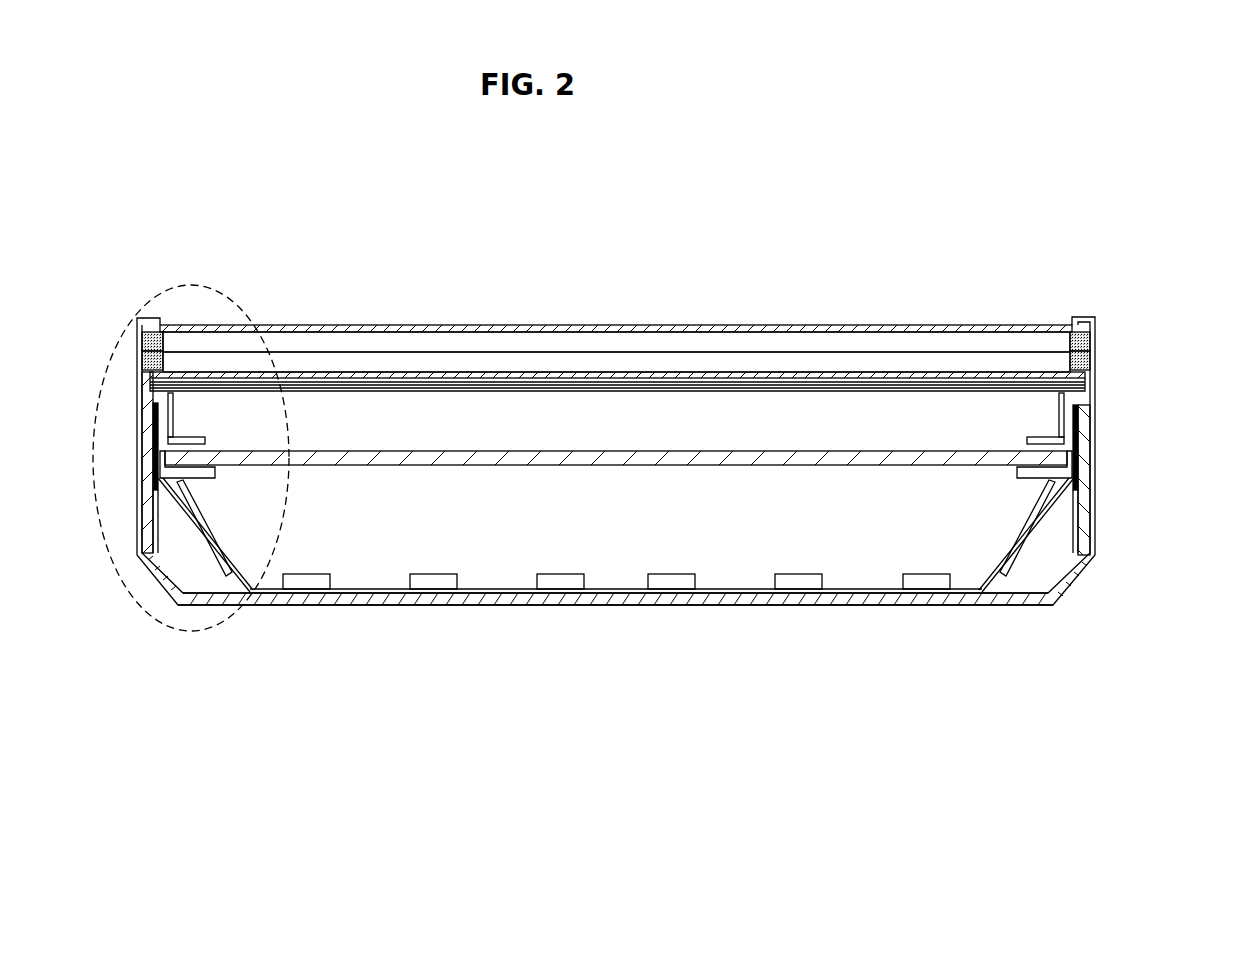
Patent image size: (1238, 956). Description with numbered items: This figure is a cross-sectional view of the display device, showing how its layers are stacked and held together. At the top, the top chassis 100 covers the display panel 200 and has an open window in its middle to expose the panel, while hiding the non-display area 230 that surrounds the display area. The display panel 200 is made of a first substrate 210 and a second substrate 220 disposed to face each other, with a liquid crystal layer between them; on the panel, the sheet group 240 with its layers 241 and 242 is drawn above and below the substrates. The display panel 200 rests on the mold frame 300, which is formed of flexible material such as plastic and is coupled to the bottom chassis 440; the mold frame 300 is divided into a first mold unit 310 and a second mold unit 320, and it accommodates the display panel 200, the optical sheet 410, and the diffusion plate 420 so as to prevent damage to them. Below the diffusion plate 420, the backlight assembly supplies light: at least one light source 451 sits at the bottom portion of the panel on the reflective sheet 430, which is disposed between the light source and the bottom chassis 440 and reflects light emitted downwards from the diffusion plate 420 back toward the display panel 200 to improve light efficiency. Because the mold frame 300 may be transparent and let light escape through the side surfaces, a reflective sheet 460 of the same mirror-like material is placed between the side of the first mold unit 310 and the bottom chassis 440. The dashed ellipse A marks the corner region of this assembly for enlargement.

The top chassis 100 is at (1083, 318).
The display panel 200 is at (616, 295).
The first substrate 210 is at (668, 364).
The second substrate 220 is at (602, 340).
The non-display area 230 is at (1072, 338).
The polarizing films 240 is at (617, 298).
The lower polarizing film 241 is at (870, 374).
The upper polarizing film 242 is at (813, 328).
The mold frame 300 is at (676, 482).
The first mold unit 310 is at (1080, 440).
The second mold unit 320 is at (1065, 483).
The optical sheet 410 is at (1086, 388).
The diffusion plate 420 is at (612, 457).
The reflective sheet 430 is at (757, 592).
The bottom chassis 440 is at (550, 598).
The light source 451 is at (670, 580).
The reflective sheet 460 is at (1078, 412).
The enlarged region A is at (232, 297).